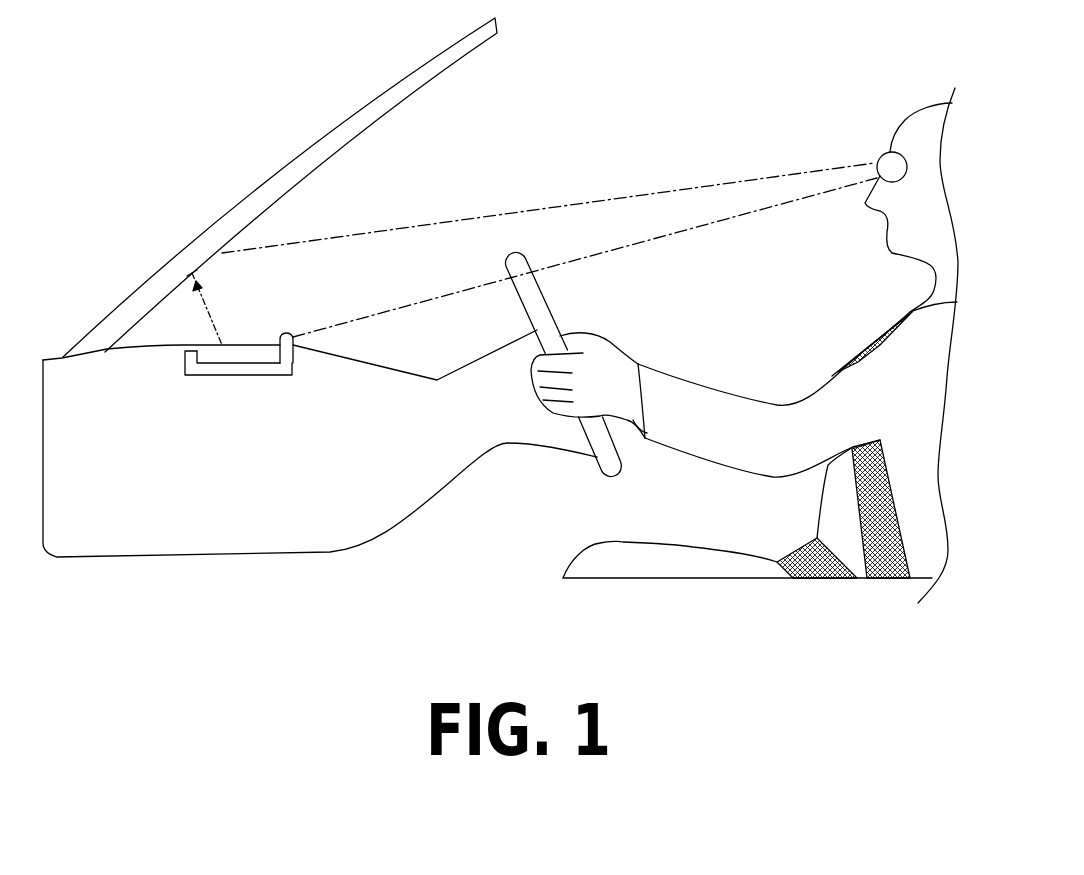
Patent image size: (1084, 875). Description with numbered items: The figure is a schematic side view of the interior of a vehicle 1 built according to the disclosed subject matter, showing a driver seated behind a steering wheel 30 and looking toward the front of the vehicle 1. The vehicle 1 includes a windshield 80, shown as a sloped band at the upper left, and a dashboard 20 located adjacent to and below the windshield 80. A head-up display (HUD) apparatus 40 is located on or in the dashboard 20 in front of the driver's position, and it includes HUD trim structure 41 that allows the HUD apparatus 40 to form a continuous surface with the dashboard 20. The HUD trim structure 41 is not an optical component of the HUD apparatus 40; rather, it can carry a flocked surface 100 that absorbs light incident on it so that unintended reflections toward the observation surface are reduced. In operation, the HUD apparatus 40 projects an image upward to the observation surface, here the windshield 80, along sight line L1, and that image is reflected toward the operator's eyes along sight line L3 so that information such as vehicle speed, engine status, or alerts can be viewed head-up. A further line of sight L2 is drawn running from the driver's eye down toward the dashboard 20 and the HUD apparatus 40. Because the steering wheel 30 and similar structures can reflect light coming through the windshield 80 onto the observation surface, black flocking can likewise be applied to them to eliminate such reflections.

The vehicle 1 is at (500, 334).
The dashboard 20 is at (422, 374).
The steering wheel 30 is at (613, 466).
The head-up display (HUD) apparatus 40 is at (247, 361).
The HUD trim structure 41 is at (203, 376).
The windshield 80 is at (361, 135).
The flocked surface 100 is at (293, 362).
The sight line L1 is at (212, 325).
The line of sight L2 is at (410, 302).
The sight line L3 is at (533, 208).